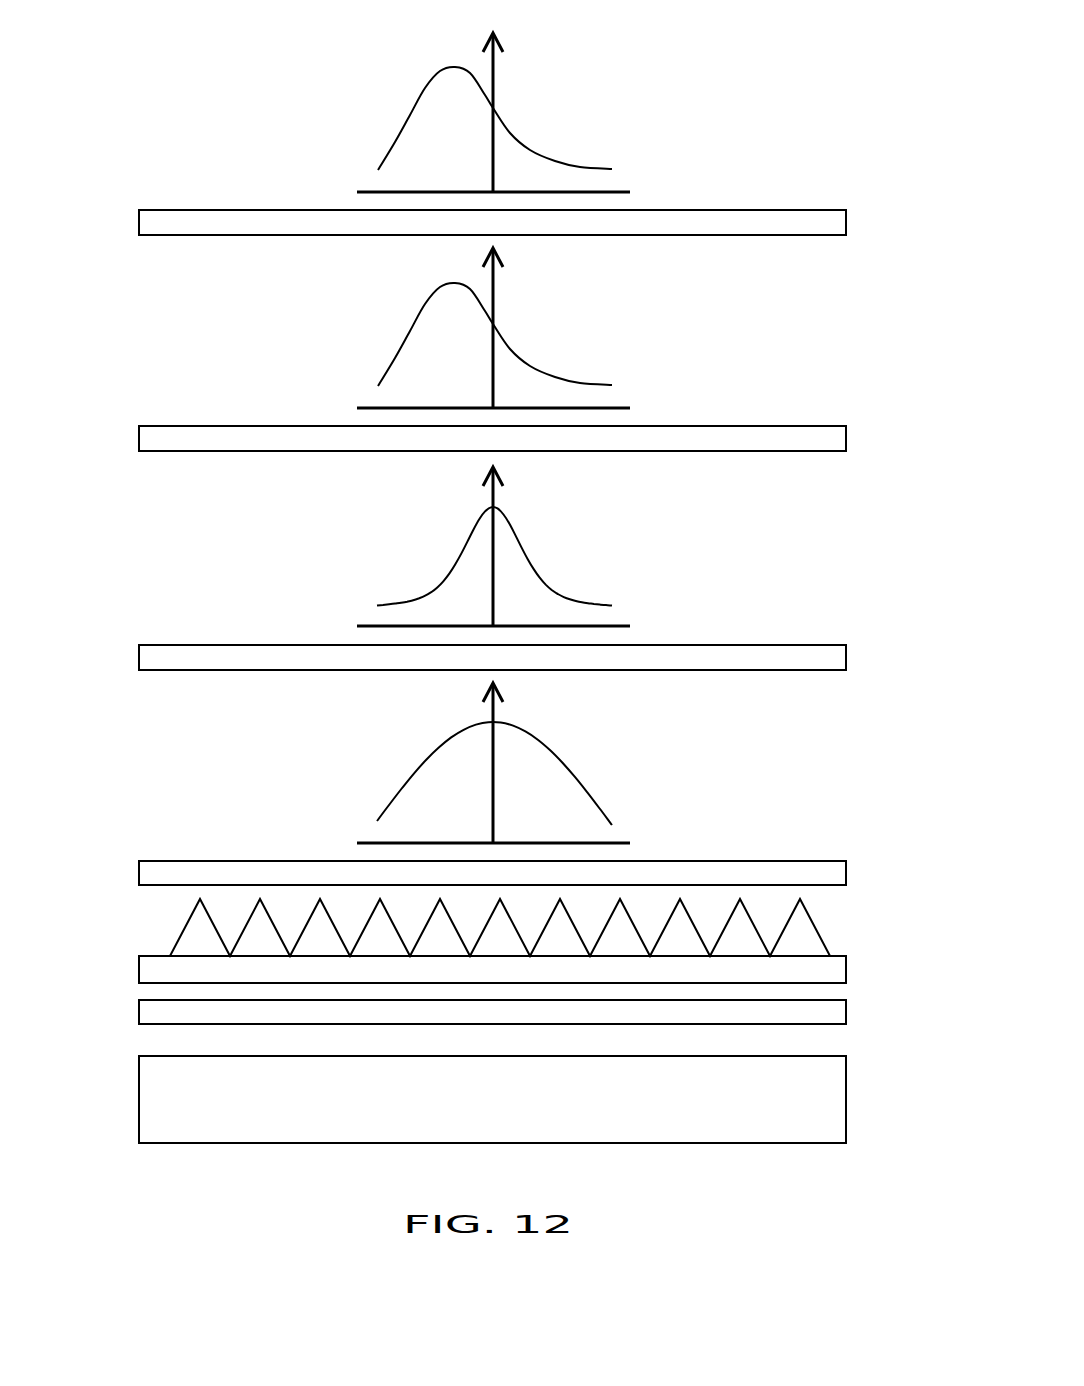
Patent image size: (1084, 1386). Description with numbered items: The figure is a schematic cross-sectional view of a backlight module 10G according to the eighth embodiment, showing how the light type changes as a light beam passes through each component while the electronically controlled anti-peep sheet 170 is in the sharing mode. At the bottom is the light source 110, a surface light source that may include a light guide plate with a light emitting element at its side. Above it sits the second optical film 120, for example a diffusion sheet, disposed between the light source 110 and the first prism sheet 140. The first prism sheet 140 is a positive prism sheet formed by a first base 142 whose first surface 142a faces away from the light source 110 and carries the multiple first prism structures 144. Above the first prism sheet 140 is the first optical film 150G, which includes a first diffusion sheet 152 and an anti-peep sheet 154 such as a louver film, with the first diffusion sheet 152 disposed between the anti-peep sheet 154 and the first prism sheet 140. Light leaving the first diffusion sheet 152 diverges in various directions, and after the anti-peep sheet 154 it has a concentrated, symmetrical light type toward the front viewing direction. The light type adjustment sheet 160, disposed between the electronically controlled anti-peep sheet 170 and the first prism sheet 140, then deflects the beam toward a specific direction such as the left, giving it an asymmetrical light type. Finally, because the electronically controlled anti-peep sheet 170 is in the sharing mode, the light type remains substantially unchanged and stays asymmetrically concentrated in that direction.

The backlight module 10G is at (918, 1178).
The light source 110 is at (812, 1098).
The second optical film 120 is at (812, 1012).
The first prism sheet 140 is at (501, 941).
The first base 142 is at (827, 972).
The first surface 142a is at (156, 955).
The first prism structures 144 is at (808, 932).
The first optical film 150G is at (549, 676).
The first diffusion sheet 152 is at (899, 692).
The anti-peep sheet 154 is at (812, 655).
The light type adjustment sheet 160 is at (819, 441).
The electronically controlled anti-peep sheet 170 is at (819, 224).